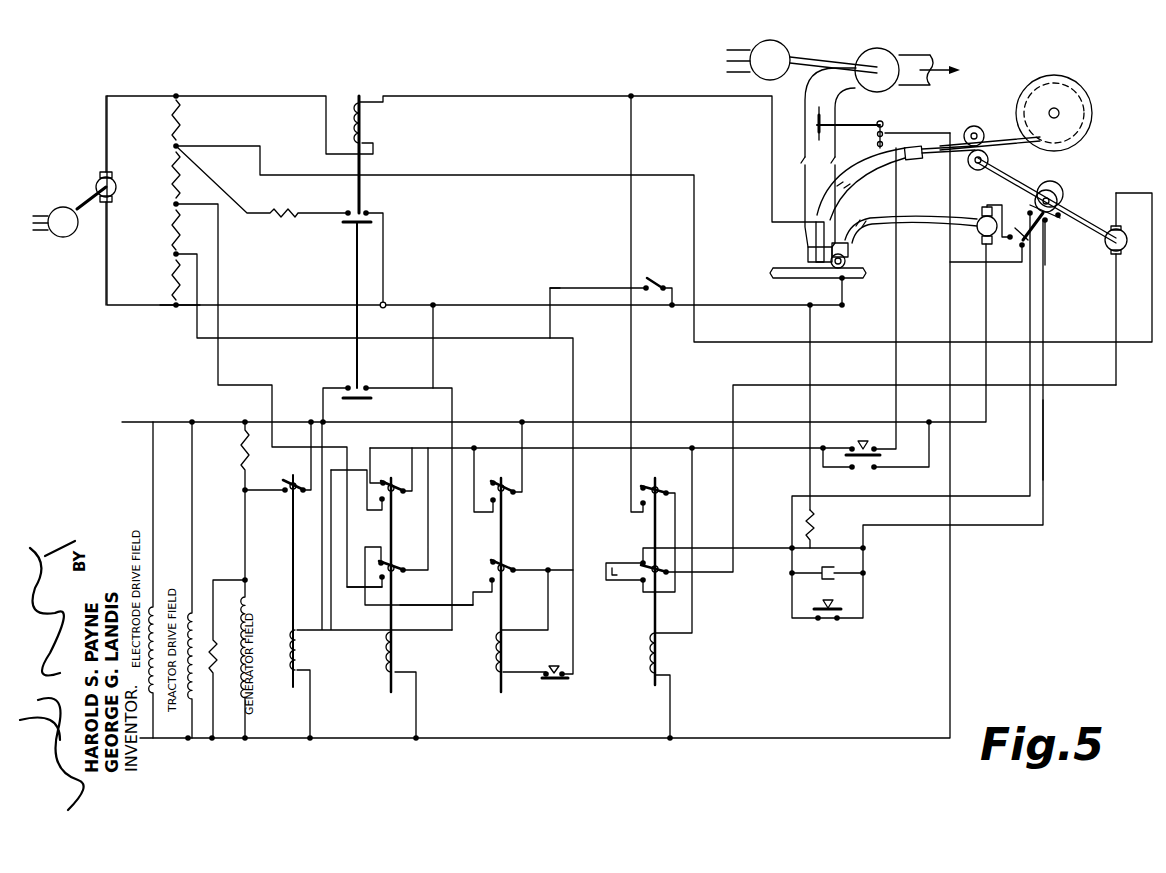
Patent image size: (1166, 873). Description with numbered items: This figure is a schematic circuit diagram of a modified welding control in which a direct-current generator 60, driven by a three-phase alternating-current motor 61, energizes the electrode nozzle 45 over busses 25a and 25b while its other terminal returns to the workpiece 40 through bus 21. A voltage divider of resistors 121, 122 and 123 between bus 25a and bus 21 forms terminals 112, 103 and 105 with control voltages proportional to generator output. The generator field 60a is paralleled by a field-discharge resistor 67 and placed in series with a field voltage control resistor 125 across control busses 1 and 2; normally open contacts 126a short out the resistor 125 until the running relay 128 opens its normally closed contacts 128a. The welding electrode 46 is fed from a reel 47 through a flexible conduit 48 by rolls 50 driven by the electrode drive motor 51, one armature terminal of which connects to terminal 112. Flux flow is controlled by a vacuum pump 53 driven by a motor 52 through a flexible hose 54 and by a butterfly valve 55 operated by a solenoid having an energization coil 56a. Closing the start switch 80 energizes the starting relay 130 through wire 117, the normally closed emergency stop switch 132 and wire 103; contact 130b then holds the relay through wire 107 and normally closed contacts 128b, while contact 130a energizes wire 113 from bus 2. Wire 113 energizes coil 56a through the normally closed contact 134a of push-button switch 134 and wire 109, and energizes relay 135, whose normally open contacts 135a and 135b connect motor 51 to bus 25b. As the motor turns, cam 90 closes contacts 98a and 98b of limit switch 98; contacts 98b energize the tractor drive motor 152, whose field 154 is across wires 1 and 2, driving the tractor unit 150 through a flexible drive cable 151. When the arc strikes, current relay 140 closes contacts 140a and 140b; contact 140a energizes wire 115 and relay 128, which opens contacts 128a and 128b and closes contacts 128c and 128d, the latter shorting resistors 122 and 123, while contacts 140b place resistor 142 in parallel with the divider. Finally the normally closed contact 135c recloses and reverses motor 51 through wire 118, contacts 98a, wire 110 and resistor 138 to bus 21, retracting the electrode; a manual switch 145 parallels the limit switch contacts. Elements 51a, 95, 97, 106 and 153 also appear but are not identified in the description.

The control voltage bus 1 is at (206, 422).
The control voltage bus 2 is at (282, 738).
The bus 21 is at (182, 306).
The bus 25a is at (298, 96).
The bus 25b is at (472, 96).
The workpiece 40 is at (806, 284).
The electrode nozzle 45 is at (814, 221).
The welding electrode 46 is at (1008, 142).
The reel 47 is at (1070, 108).
The flexible conduit 48 is at (846, 174).
The rolls 50 is at (980, 127).
The electrode drive motor 51 is at (1118, 228).
The electrode drive field 51a is at (152, 608).
The motor 52 is at (790, 54).
The vacuum pump 53 is at (878, 50).
The flexible hose 54 is at (839, 93).
The butterfly valve 55 is at (817, 108).
The energization coil 56a is at (890, 134).
The direct-current generator 60 is at (100, 178).
The generator field 60a is at (245, 598).
The three-phase alternating-current motor 61 is at (58, 208).
The field-discharge resistor 67 is at (214, 640).
The start switch 80 is at (647, 278).
The cam 90 is at (1056, 190).
The roller 95 is at (1062, 182).
The shaft 97 is at (1069, 212).
The limit switch 98 is at (1058, 216).
The normally open contacts 98a is at (1045, 222).
The normally open contacts 98b is at (1020, 252).
The terminal 103 is at (175, 204).
The terminal 105 is at (174, 255).
The conductor 106 is at (692, 516).
The wire 107 is at (478, 606).
The wire 109 is at (898, 323).
The wire 110 is at (1045, 437).
The terminal 112 is at (174, 146).
The wire 113 is at (452, 448).
The wire 115 is at (412, 390).
The wire 117 is at (554, 286).
The wire 118 is at (780, 548).
The resistor 121 is at (174, 175).
The resistor 122 is at (174, 232).
The resistor 123 is at (174, 281).
The field voltage control resistor 125 is at (243, 456).
The normally open contacts 126a is at (282, 483).
The running control relay 128 is at (382, 658).
The normally closed contacts 128a is at (403, 462).
The normally closed contacts 128b is at (393, 560).
The normally open contacts 128c is at (377, 505).
The normally open contacts 128d is at (377, 587).
The starting relay 130 is at (496, 660).
The normally open contacts 130a is at (492, 502).
The normally open contacts 130b is at (490, 552).
The emergency stop switch 132 is at (556, 666).
The push-button control switch 134 is at (864, 437).
The normally closed contact 134a is at (879, 468).
The electrode feed relay 135 is at (646, 658).
The normally open contacts 135a is at (631, 484).
The normally open contacts 135b is at (638, 586).
The normally closed contact 135c is at (640, 560).
The resistor 138 is at (816, 526).
The current relay 140 is at (364, 123).
The normally open contacts 140a is at (359, 386).
The normally open contacts 140b is at (364, 208).
The resistor 142 is at (282, 220).
The manually controlled normally open contact switch 145 is at (828, 622).
The tractor unit 150 is at (850, 252).
The flexible drive cable 151 is at (846, 261).
The tractor drive motor 152 is at (987, 206).
The tube 153 is at (938, 218).
The field 154 is at (188, 616).